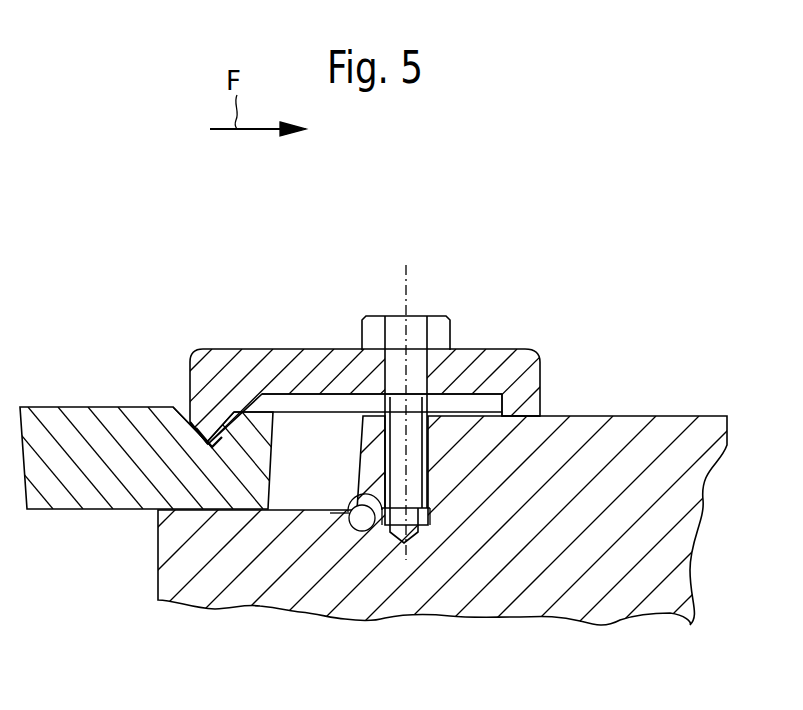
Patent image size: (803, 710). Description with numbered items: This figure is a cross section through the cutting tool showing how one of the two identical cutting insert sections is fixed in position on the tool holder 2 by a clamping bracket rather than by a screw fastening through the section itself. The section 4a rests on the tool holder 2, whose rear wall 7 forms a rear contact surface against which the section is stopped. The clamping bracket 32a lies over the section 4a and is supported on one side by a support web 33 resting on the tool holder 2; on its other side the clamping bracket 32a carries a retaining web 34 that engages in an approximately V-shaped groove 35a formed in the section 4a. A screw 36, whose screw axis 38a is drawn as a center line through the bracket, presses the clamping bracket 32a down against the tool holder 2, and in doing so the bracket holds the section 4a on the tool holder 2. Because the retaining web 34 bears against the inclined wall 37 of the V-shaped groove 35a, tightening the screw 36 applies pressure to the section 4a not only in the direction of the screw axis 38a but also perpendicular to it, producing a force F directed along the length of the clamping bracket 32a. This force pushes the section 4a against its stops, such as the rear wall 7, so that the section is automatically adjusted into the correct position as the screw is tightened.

The tool holder 2 is at (680, 507).
The section 4a is at (50, 427).
The rear wall 7 is at (356, 495).
The clamping bracket 32a is at (503, 371).
The support web 33 is at (523, 408).
The retaining web 34 is at (198, 432).
The V-shaped groove 35a is at (180, 411).
The screw 36 is at (443, 332).
The inclined wall 37 is at (224, 432).
The screw axis 38a is at (406, 303).